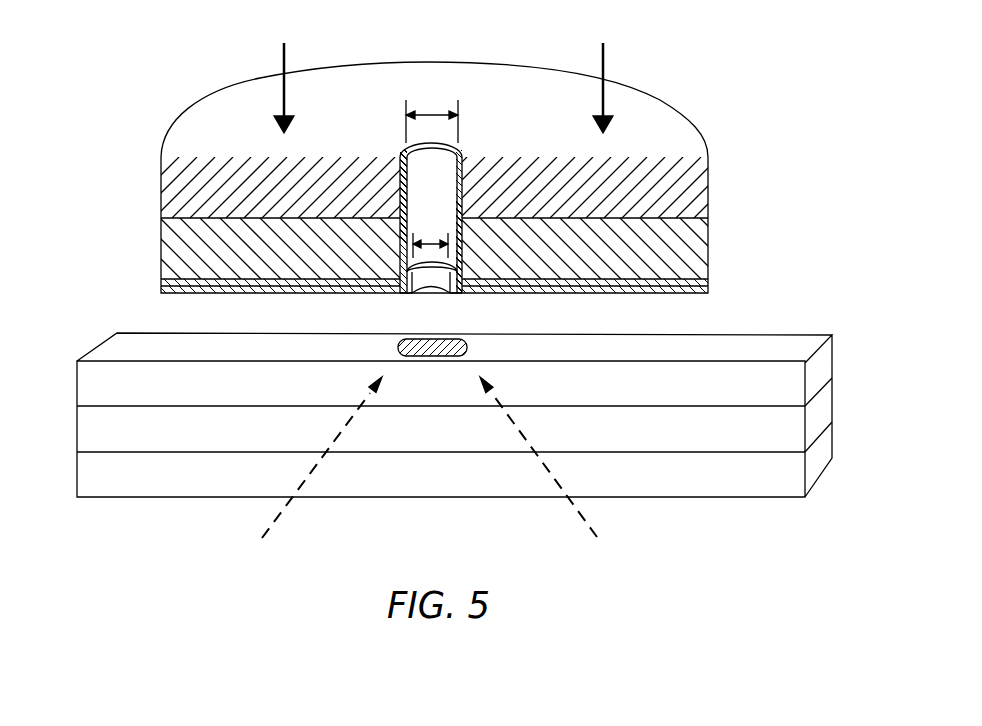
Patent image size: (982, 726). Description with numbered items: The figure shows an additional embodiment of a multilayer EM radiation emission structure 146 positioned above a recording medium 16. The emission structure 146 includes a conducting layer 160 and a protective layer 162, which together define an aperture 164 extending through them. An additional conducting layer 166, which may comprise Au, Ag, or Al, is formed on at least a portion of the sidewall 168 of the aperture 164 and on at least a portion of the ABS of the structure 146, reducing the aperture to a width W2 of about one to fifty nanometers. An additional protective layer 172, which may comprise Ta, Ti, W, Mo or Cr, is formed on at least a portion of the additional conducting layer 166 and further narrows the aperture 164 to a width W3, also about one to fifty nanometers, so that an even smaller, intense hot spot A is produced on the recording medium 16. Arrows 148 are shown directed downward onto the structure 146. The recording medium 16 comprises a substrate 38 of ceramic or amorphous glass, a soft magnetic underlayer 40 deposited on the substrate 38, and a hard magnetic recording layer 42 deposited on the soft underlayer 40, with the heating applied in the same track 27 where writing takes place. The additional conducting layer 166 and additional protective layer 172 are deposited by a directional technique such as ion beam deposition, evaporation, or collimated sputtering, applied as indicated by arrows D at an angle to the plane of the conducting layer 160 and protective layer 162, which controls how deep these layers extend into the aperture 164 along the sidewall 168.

The multilayer EM radiation emission structure 146 is at (712, 155).
The applied force arrows 148 is at (281, 60).
The conducting layer 160 is at (170, 190).
The protective layer 162 is at (172, 250).
The aperture 164 is at (437, 172).
The additional conducting layer 166 is at (405, 263).
The sidewall 168 is at (413, 180).
The additional protective layer 172 is at (542, 287).
The air bearing surface ABS is at (676, 284).
The reduced aperture width W2 is at (433, 113).
The further reduced aperture width W3 is at (432, 238).
The recording medium 16 is at (73, 357).
The hard magnetic recording layer 42 is at (83, 393).
The soft magnetic underlayer 40 is at (85, 435).
The substrate 38 is at (85, 478).
The track 27 is at (793, 347).
The hot spot A is at (470, 348).
The directional deposition arrows D is at (277, 518).